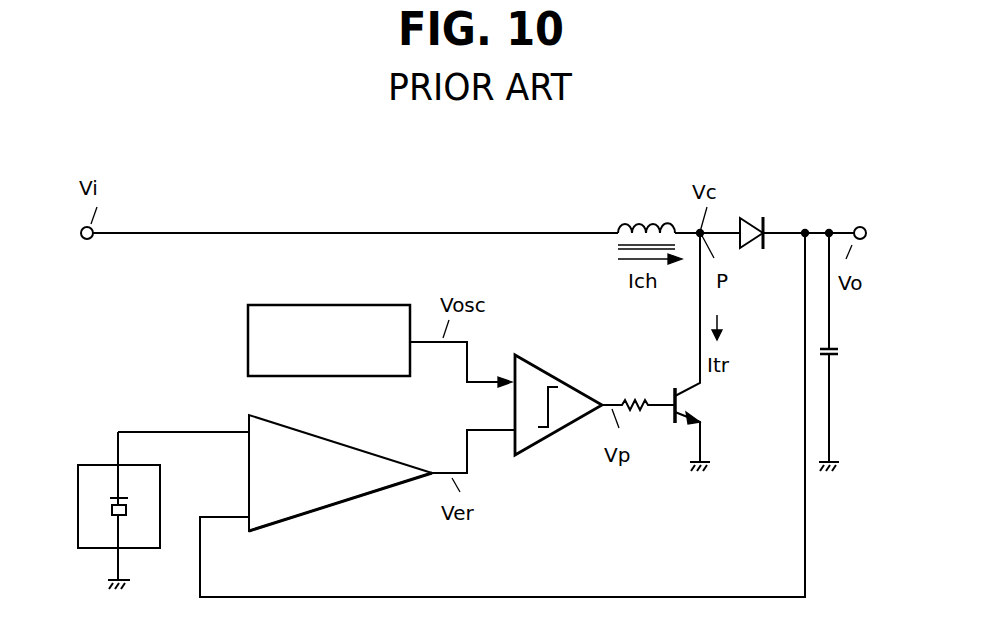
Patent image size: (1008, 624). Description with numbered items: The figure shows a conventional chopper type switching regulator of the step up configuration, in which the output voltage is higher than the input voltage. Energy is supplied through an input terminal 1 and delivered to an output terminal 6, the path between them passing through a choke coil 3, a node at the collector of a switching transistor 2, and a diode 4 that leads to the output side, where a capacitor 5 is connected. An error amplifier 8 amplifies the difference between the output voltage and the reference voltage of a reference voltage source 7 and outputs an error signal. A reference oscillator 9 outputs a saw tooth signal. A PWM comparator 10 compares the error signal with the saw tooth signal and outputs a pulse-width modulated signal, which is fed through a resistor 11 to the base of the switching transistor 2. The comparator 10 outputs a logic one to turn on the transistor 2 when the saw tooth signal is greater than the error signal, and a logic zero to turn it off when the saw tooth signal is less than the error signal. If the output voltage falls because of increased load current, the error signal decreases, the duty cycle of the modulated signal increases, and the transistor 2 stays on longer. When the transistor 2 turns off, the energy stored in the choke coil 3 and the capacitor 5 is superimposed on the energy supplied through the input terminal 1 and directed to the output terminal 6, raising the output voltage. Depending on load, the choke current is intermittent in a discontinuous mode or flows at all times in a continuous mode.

The input terminal 1 is at (83, 243).
The switching transistor 2 is at (700, 405).
The choke coil 3 is at (650, 215).
The diode 4 is at (748, 214).
The capacitor 5 is at (846, 348).
The output terminal 6 is at (851, 223).
The reference voltage source 7 is at (93, 462).
The error amplifier 8 is at (372, 447).
The reference oscillator 9 is at (364, 304).
The PWM comparator 10 is at (570, 385).
The base resistor 11 is at (638, 396).